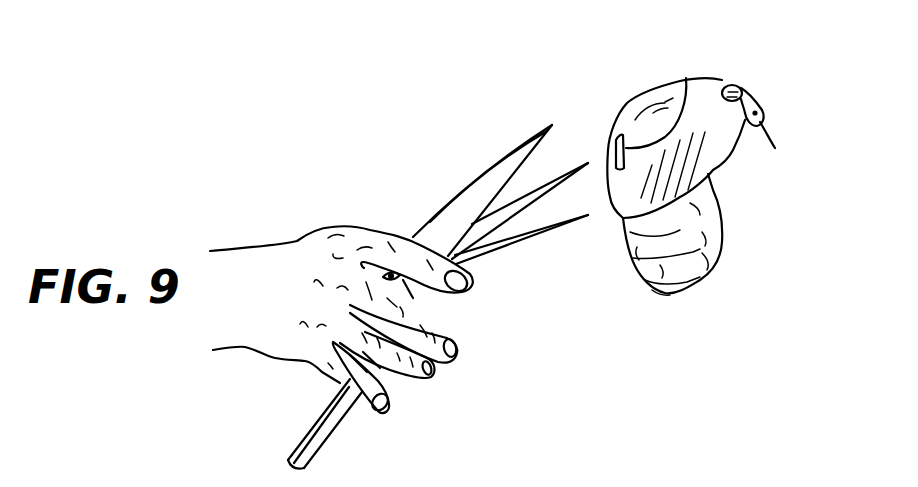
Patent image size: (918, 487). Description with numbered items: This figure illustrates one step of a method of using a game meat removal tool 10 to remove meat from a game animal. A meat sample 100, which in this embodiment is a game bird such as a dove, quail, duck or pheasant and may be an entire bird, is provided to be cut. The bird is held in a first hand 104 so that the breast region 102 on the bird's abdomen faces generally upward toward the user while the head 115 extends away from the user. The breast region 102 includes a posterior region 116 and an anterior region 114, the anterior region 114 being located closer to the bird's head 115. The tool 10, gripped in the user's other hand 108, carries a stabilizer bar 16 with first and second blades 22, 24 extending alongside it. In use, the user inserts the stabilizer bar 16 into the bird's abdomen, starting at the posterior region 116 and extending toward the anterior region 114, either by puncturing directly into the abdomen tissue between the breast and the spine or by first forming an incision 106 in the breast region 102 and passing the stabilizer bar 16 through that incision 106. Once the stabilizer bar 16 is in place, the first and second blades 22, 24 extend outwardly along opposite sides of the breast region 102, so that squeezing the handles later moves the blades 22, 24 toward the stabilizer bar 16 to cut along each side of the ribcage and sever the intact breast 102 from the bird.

The tool 10 is at (471, 207).
The stabilizer bar 16 is at (581, 162).
The first blade 22 is at (507, 240).
The second blade 24 is at (491, 163).
The meat sample 100 is at (681, 173).
The breast region 102 is at (630, 104).
The first hand 104 is at (722, 240).
The incision 106 is at (686, 78).
The user's hand 108 is at (297, 238).
The anterior region 114 is at (758, 88).
The head 115 is at (775, 148).
The posterior region 116 is at (640, 145).